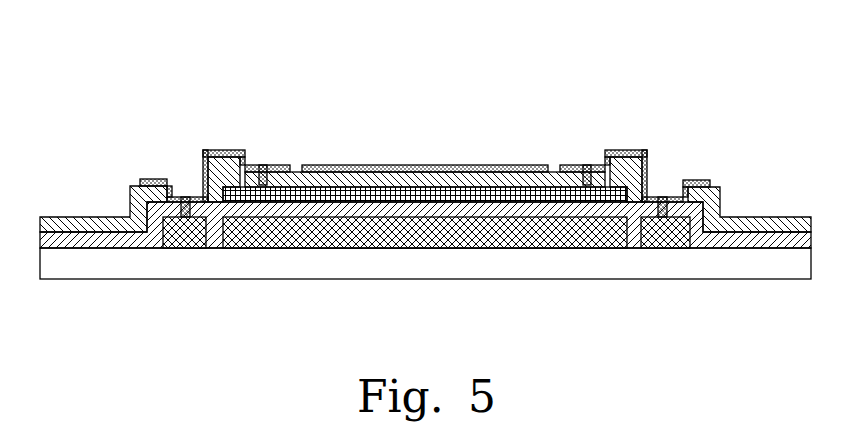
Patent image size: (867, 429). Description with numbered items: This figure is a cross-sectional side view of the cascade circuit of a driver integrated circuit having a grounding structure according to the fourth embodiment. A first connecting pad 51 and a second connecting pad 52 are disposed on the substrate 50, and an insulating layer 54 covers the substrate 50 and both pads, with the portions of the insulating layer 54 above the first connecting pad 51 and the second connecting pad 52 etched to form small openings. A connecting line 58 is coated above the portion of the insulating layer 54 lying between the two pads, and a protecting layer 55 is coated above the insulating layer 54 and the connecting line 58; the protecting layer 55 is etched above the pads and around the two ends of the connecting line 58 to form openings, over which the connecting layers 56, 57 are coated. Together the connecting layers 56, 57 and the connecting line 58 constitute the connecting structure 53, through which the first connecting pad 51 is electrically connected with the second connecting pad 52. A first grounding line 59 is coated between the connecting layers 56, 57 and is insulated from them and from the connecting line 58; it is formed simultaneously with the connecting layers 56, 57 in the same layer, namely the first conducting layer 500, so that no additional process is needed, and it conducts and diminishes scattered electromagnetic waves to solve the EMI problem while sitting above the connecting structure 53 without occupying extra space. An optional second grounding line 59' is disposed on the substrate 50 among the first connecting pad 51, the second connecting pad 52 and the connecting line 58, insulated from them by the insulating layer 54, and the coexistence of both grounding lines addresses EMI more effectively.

The substrate 50 is at (477, 270).
The first connecting pad 51 is at (183, 249).
The second connecting pad 52 is at (673, 250).
The connecting structure 53 is at (638, 95).
The insulating layer 54 is at (812, 238).
The protecting layer 55 is at (735, 218).
The connecting layer 56 is at (693, 180).
The connecting layer 57 is at (222, 150).
The connecting line 58 is at (503, 196).
The first grounding line 59 is at (425, 152).
The second grounding line 59' is at (425, 277).
The first conducting layer 500 is at (438, 119).